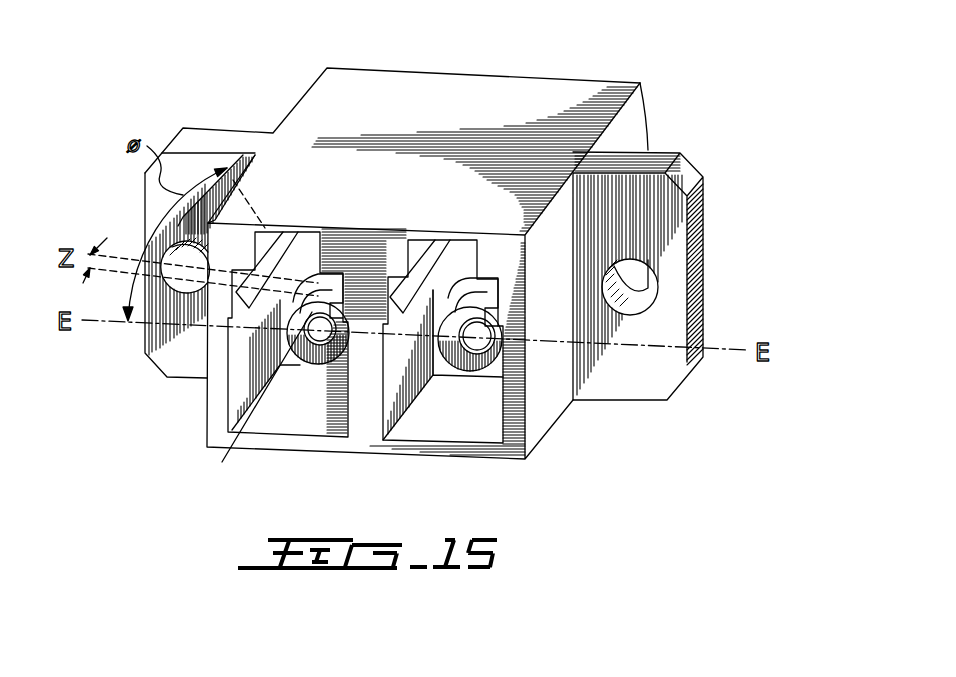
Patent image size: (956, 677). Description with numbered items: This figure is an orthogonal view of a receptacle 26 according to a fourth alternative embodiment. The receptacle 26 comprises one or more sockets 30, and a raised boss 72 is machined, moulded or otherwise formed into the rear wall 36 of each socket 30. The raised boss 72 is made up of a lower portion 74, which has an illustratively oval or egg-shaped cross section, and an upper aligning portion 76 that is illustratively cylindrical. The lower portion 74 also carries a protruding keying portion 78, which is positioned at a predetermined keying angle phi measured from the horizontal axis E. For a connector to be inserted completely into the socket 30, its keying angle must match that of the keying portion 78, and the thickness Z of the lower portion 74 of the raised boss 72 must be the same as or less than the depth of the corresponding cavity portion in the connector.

The receptacle 26 is at (535, 100).
The socket 30 is at (245, 372).
The rear wall 36 is at (277, 283).
The raised boss 72 is at (303, 363).
The lower portion 74 is at (300, 285).
The upper aligning portion 76 is at (322, 300).
The protruding keying portion 78 is at (330, 286).